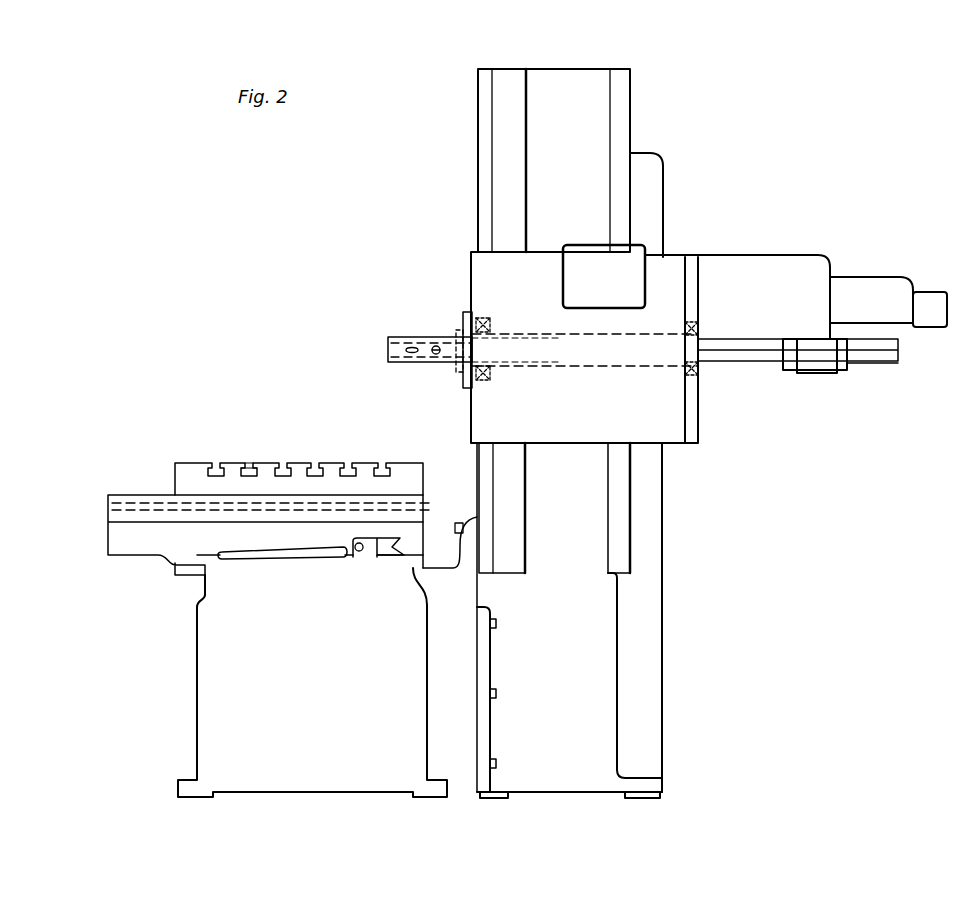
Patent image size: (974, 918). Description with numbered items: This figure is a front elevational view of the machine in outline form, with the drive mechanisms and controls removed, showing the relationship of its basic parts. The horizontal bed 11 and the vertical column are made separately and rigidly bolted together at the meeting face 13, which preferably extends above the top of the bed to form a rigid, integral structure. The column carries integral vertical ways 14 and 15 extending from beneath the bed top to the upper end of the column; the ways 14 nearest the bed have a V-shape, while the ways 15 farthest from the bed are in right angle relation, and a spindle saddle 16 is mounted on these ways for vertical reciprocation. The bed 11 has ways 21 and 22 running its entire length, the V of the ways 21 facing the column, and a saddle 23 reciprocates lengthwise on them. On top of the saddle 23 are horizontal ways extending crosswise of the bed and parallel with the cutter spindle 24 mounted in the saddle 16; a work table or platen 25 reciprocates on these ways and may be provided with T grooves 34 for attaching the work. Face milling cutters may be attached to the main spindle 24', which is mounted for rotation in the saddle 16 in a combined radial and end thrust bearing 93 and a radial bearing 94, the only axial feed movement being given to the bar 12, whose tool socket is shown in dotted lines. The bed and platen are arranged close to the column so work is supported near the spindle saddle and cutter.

The bed 11 is at (212, 663).
The bar 12 is at (546, 180).
The meeting face 13 is at (477, 667).
The ways 14 is at (492, 453).
The ways 15 is at (617, 492).
The spindle saddle 16 is at (483, 285).
The ways 21 is at (378, 554).
The ways 22 is at (212, 550).
The saddle 23 is at (115, 532).
The cutter spindle 24 is at (613, 357).
The main spindle 24' is at (450, 344).
The work table or platen 25 is at (300, 463).
The T grooves 34 is at (252, 463).
The combined radial and end thrust bearing 93 is at (486, 320).
The radial bearing 94 is at (698, 326).